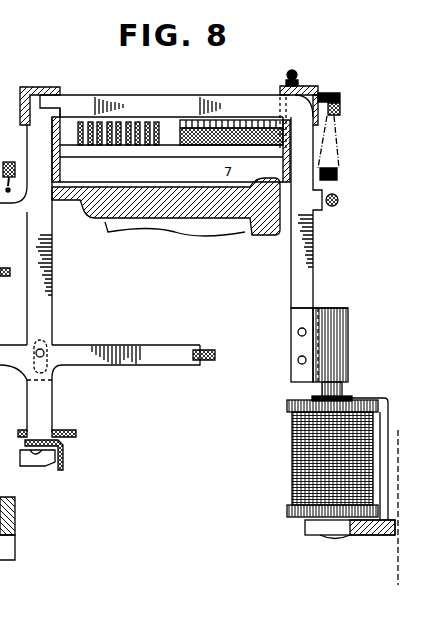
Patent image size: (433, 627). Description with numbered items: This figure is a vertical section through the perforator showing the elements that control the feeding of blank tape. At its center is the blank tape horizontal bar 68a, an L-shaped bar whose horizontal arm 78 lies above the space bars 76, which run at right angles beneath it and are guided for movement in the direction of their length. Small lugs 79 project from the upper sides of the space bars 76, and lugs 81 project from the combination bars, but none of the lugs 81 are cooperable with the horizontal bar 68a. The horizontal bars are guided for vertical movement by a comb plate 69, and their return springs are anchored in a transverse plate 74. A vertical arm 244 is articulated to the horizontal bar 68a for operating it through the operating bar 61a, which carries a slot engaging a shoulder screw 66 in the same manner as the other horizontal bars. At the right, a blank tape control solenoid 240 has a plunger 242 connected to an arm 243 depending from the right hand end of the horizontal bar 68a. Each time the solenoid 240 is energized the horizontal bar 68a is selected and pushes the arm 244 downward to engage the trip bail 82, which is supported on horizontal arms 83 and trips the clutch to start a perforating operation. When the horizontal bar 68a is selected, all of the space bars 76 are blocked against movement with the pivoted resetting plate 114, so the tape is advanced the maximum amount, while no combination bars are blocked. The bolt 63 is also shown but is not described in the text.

The plate 74 is at (30, 90).
The blank tape horizontal bar 68a is at (104, 89).
The horizontal arm 78 is at (164, 100).
The lugs 79 is at (136, 160).
The space bars 76 is at (132, 150).
The lugs 81 is at (238, 160).
The bolt 63 is at (5, 266).
The vertical arm 244 is at (52, 301).
The shoulder screws 66 is at (45, 349).
The operating bar 61a is at (124, 345).
The comb plate 69 is at (62, 431).
The trip bail 82 is at (64, 467).
The horizontal arms 83 is at (37, 463).
The resetting plate 114 is at (6, 550).
The arm 243 is at (300, 271).
The plunger 242 is at (322, 387).
The blank tape control solenoid 240 is at (292, 471).